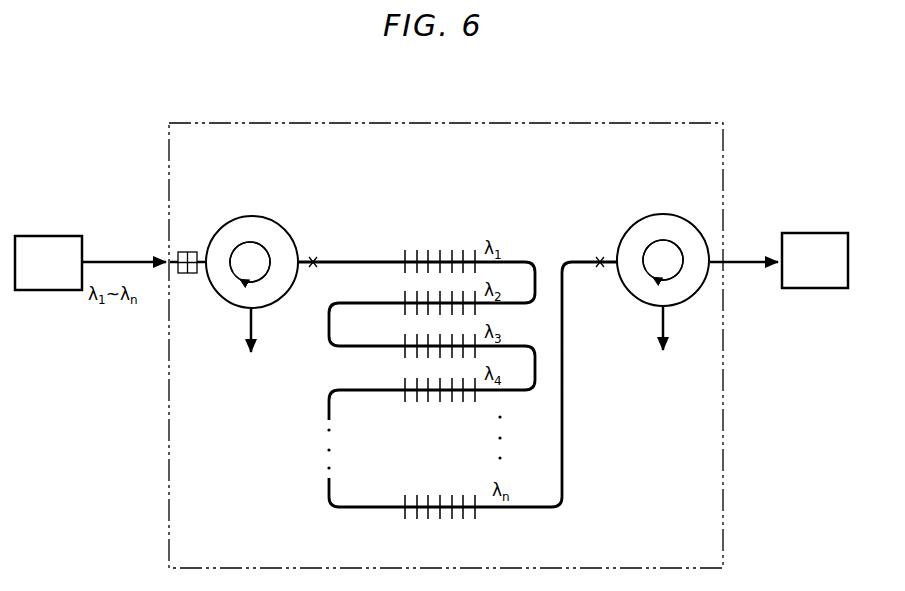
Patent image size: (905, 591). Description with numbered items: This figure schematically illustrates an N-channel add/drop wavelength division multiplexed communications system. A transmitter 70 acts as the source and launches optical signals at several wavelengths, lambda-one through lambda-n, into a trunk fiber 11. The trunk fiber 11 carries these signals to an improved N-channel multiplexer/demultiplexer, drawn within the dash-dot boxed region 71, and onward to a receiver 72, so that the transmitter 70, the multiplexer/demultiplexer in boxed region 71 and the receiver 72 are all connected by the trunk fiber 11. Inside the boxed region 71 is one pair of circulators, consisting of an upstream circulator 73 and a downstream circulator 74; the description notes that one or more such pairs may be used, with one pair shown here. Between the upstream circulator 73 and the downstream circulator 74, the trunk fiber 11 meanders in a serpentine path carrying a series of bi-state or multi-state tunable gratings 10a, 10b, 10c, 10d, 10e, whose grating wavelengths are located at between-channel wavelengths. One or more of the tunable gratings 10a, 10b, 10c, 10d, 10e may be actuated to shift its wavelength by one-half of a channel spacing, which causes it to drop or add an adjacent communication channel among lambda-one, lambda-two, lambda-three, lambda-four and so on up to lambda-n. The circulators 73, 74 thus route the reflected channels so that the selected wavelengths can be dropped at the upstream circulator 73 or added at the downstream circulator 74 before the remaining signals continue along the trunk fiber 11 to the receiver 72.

The transmitter 70 is at (42, 236).
The trunk fiber 11 is at (112, 262).
The upstream circulator 73 is at (283, 228).
The downstream circulator 74 is at (684, 220).
The receiver 72 is at (820, 233).
The boxed region 71 is at (725, 158).
The tunable grating 10a is at (394, 257).
The tunable grating 10b is at (394, 299).
The tunable grating 10c is at (398, 342).
The tunable grating 10d is at (394, 386).
The tunable grating 10e is at (392, 515).